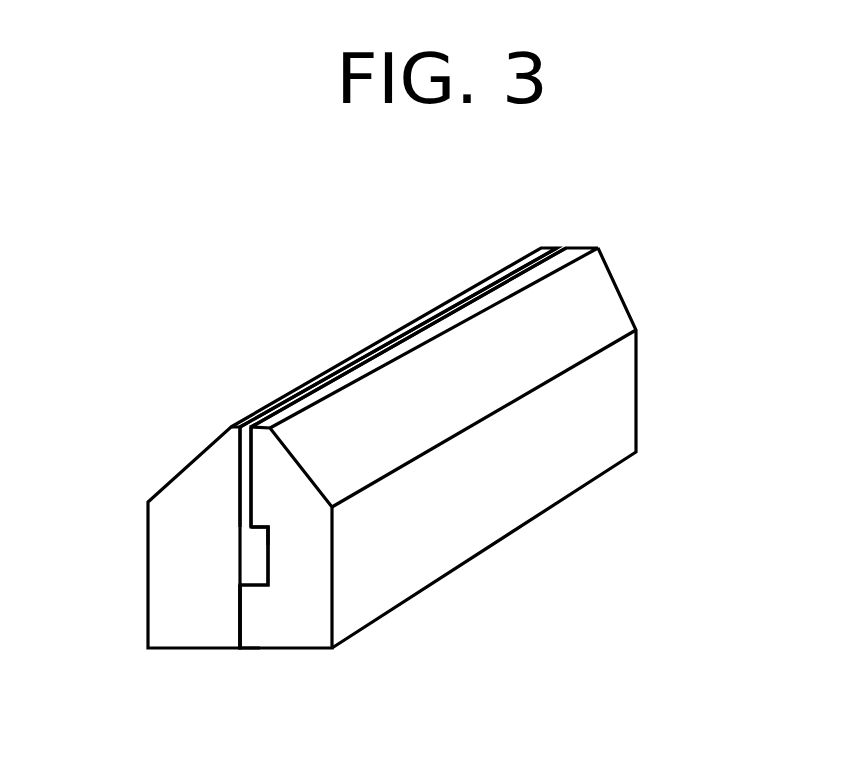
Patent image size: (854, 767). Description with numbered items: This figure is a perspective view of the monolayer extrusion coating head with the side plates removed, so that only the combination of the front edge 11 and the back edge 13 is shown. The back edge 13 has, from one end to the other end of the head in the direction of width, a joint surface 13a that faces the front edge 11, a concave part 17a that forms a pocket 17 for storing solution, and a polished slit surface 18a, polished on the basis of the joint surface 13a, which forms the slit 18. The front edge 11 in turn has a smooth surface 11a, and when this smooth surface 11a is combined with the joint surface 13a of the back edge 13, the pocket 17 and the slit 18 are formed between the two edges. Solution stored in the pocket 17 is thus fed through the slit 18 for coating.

The front edge 11 is at (163, 573).
The smooth surface 11a is at (243, 617).
The back edge 13 is at (302, 625).
The joint surface 13a is at (235, 630).
The pocket 17 is at (257, 568).
The concave part 17a is at (268, 538).
The slit 18 is at (250, 478).
The slit surface 18a is at (252, 457).